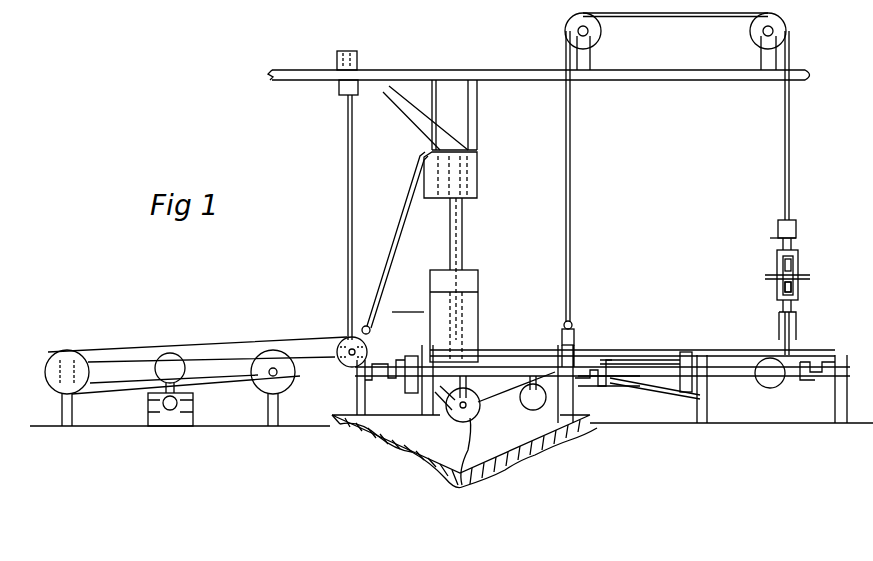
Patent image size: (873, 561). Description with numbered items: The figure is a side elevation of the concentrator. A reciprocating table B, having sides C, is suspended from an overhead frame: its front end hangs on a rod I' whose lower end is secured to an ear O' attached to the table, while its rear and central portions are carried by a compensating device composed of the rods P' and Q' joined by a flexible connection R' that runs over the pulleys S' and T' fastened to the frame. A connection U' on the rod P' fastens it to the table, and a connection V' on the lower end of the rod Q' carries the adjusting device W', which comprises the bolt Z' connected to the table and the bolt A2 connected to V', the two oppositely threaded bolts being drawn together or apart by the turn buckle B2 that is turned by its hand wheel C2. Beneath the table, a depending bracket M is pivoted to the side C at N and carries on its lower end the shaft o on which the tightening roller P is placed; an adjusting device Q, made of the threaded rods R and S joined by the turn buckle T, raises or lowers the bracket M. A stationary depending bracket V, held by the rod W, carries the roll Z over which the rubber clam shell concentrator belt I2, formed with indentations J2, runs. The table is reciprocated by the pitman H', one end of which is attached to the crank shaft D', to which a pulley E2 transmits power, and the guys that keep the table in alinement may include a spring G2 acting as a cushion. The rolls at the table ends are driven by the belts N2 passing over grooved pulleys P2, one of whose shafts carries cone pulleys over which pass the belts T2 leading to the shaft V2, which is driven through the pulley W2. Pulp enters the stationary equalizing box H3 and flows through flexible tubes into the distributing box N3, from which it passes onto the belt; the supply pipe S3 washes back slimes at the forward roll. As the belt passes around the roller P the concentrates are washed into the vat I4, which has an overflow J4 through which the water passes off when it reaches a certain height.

The pitman H' is at (539, 61).
The pulley S' is at (594, 41).
The pulley T' is at (675, 26).
The flexible connection R' is at (785, 41).
The rod P' is at (586, 188).
The rod Q' is at (803, 125).
The connection V' is at (802, 231).
The bolt A2 is at (770, 238).
The adjusting device W' is at (807, 273).
The hand wheel C2 is at (768, 277).
The turn buckle B2 is at (799, 286).
The bolt Z' is at (801, 327).
The equalizing box H3 is at (478, 172).
The distributing box N3 is at (476, 278).
The suspending rod I' is at (366, 217).
The water supply pipe S3 is at (362, 326).
The pulley E2 is at (408, 303).
The grooved pulley P2 is at (46, 378).
The shaft V2 is at (290, 355).
The pulley W2 is at (296, 360).
The belt T2 is at (118, 358).
The belt N2 is at (205, 346).
The ear O' is at (333, 329).
The vat I4 is at (512, 476).
The overflow J4 is at (332, 420).
The tightening roller P is at (461, 462).
The reciprocating table B is at (505, 352).
The pivot N is at (480, 350).
The connection U' is at (581, 371).
The side C is at (606, 352).
The concentrator belt I2 is at (632, 356).
The stationary depending bracket V is at (593, 383).
The threaded rod S is at (385, 370).
The turn buckle T is at (401, 386).
The adjusting device Q is at (424, 415).
The threaded rod R is at (445, 412).
The depending bracket M is at (470, 399).
The shaft o is at (470, 414).
The rod W is at (516, 394).
The spring G2 is at (655, 394).
The indentation J2 is at (700, 424).
The crank shaft D' is at (775, 409).
The roll Z is at (703, 408).